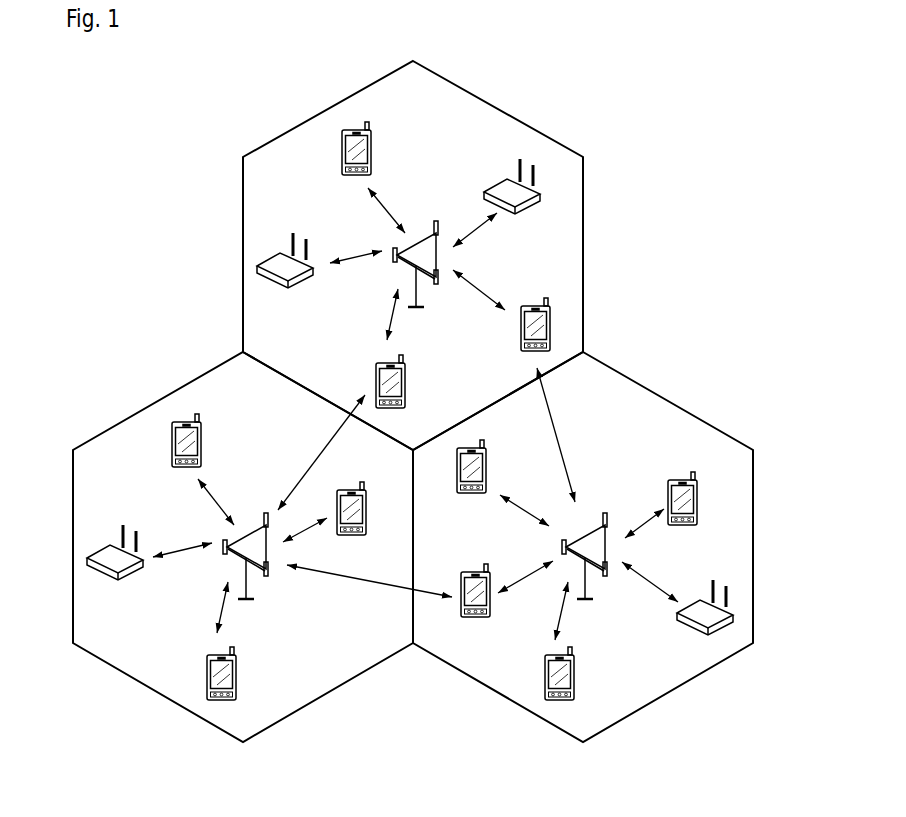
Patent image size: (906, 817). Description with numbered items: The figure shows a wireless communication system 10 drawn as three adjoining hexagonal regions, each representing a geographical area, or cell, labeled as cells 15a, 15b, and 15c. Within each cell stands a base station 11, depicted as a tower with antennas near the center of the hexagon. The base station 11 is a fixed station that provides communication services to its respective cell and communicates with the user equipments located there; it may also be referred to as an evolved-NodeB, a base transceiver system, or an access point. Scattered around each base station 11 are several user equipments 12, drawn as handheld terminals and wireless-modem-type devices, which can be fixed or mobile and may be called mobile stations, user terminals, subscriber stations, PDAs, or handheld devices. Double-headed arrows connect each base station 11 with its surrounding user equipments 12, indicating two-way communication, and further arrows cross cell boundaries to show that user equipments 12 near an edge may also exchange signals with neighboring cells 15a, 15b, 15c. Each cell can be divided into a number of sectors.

The wireless communication system 10 is at (653, 162).
The base station 11 is at (428, 232).
The user equipment 12 is at (372, 149).
The cell 15a is at (583, 243).
The cell 15b is at (690, 413).
The cell 15c is at (138, 412).